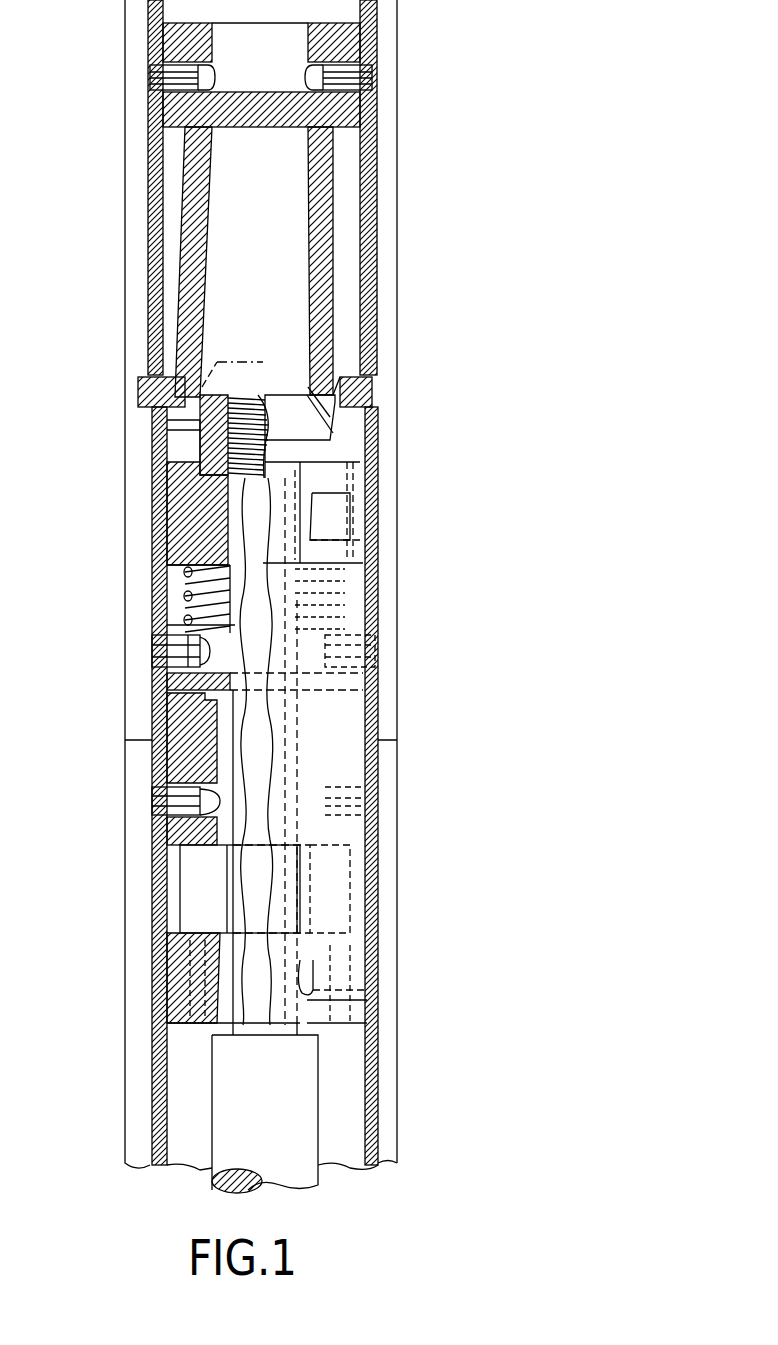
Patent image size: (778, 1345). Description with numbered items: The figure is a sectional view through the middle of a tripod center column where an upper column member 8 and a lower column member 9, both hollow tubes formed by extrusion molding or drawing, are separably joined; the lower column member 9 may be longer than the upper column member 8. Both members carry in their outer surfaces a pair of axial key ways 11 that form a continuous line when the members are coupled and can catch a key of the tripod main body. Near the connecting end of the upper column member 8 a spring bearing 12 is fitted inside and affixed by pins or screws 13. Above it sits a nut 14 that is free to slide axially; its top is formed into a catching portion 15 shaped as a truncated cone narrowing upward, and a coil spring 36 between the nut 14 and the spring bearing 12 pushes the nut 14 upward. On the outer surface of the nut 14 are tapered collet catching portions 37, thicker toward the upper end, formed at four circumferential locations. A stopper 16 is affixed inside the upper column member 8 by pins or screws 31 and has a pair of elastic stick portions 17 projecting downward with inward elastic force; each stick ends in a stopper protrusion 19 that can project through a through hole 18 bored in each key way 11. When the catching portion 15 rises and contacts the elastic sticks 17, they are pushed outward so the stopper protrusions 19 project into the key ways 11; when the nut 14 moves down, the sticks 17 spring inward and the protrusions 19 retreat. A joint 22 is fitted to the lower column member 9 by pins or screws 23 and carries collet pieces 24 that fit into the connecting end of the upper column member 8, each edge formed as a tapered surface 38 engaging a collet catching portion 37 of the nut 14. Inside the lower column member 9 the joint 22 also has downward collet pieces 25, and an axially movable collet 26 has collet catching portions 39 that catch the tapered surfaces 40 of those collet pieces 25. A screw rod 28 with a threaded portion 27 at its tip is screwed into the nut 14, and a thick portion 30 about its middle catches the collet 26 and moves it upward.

The upper column member 8 is at (380, 290).
The lower column member 9 is at (380, 885).
The key way 11 is at (150, 555).
The spring bearing 12 is at (160, 700).
The pins or screws 13 is at (168, 672).
The nut 14 is at (355, 468).
The catching portion 15 is at (168, 428).
The stopper 16 is at (335, 115).
The elastic stick portion 17 is at (190, 253).
The through hole 18 is at (350, 378).
The stopper protrusion 19 is at (150, 395).
The joint 22 is at (190, 755).
The pins or screws 23 is at (168, 823).
The collet piece 24 is at (195, 600).
The collet piece 25 is at (200, 885).
The collet 26 is at (180, 1012).
The threaded portion 27 is at (215, 500).
The screw rod 28 is at (250, 900).
The thick portion 30 is at (295, 1100).
The pins or screws 31 is at (148, 72).
The coil spring 36 is at (195, 625).
The collet catching portion 37 is at (348, 500).
The tapered surface 38 is at (330, 522).
The collet catching portion 39 is at (315, 975).
The tapered surface 40 is at (300, 998).